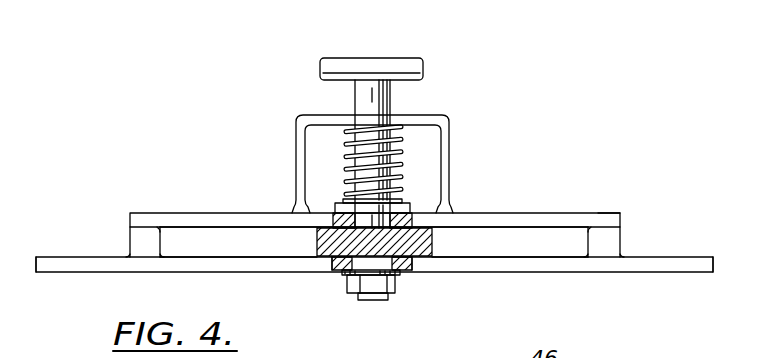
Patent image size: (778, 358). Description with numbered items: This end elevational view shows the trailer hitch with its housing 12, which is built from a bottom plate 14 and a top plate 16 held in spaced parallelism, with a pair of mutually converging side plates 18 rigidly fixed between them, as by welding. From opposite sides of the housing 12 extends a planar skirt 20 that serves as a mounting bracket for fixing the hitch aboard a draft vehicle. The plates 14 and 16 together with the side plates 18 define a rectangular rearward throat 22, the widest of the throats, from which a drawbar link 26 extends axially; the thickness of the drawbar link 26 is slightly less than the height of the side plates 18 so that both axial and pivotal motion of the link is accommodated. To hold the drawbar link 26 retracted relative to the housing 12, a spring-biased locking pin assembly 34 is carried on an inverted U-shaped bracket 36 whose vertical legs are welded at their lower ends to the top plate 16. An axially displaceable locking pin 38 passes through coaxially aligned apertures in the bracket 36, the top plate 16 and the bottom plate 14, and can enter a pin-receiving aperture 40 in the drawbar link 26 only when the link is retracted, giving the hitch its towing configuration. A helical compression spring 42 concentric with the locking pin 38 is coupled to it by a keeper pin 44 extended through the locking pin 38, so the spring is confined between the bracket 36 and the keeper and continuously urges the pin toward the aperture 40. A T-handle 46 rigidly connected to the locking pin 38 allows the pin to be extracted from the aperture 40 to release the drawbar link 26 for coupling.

The housing 12 is at (598, 208).
The bottom plate 14 is at (552, 262).
The top plate 16 is at (512, 218).
The side plates 18 is at (133, 243).
The skirt 20 is at (77, 263).
The rearward throat 22 is at (213, 243).
The drawbar link 26 is at (317, 238).
The spring-biased locking pin assembly 34 is at (379, 125).
The bracket 36 is at (450, 136).
The locking pin 38 is at (381, 103).
The pin-receiving aperture 40 is at (432, 243).
The compression spring 42 is at (340, 152).
The keeper pin 44 is at (338, 200).
The T-handle 46 is at (393, 70).